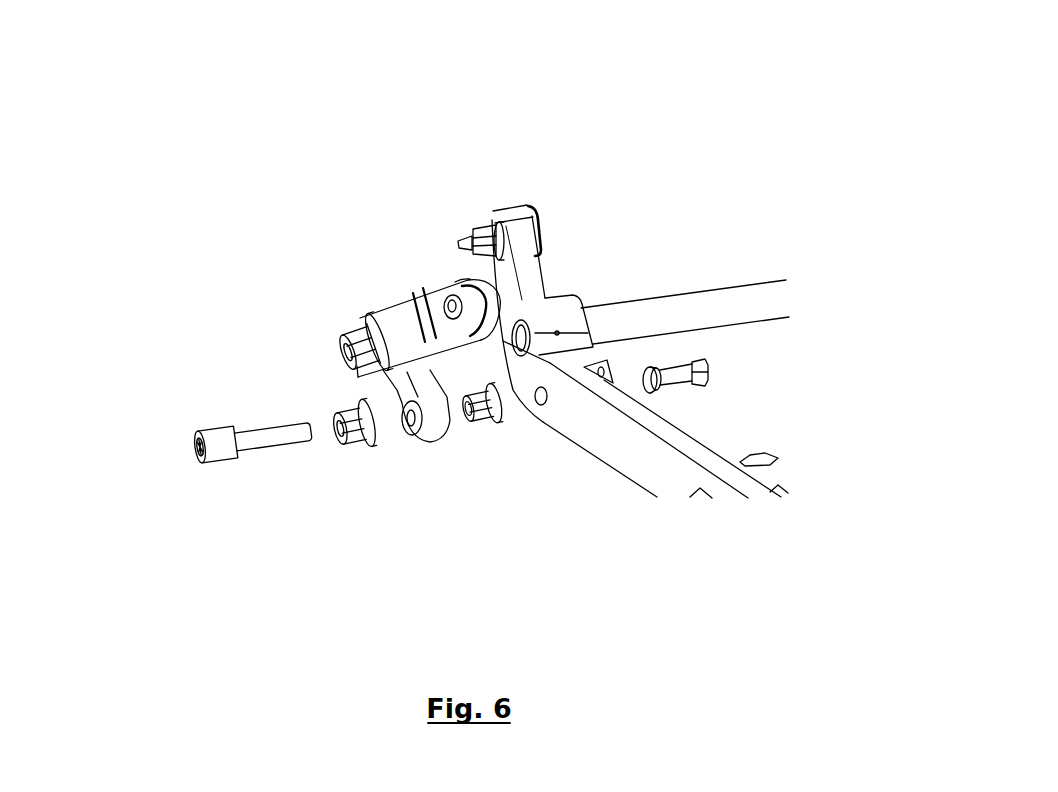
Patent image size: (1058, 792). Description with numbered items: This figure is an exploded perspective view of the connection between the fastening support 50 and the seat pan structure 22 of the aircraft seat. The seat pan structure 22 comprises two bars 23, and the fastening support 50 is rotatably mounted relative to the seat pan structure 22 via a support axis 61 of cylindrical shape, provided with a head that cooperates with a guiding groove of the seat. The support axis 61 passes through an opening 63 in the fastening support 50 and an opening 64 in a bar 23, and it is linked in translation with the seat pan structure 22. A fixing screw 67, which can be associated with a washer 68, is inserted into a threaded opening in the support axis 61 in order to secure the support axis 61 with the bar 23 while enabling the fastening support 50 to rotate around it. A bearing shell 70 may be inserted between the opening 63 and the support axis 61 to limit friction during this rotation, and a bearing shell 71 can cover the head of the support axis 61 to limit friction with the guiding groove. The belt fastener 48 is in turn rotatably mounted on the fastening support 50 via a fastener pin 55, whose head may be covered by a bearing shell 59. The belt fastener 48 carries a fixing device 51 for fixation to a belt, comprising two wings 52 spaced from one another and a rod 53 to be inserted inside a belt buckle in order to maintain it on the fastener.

The seat pan structure 22 is at (577, 242).
The bar 23 is at (632, 455).
The belt fastener 48 is at (408, 312).
The fastening support 50 is at (430, 442).
The fixing device 51 is at (455, 270).
The wings 52 is at (432, 307).
The rod 53 is at (449, 295).
The fastener pin 55 is at (355, 346).
The bearing shell 59 is at (355, 318).
The support axis 61 is at (245, 440).
The opening 63 is at (396, 443).
The opening 64 is at (540, 407).
The fixing screw 67 is at (682, 385).
The washer 68 is at (657, 403).
The bearing shell 70 is at (480, 425).
The bearing shell 71 is at (330, 444).